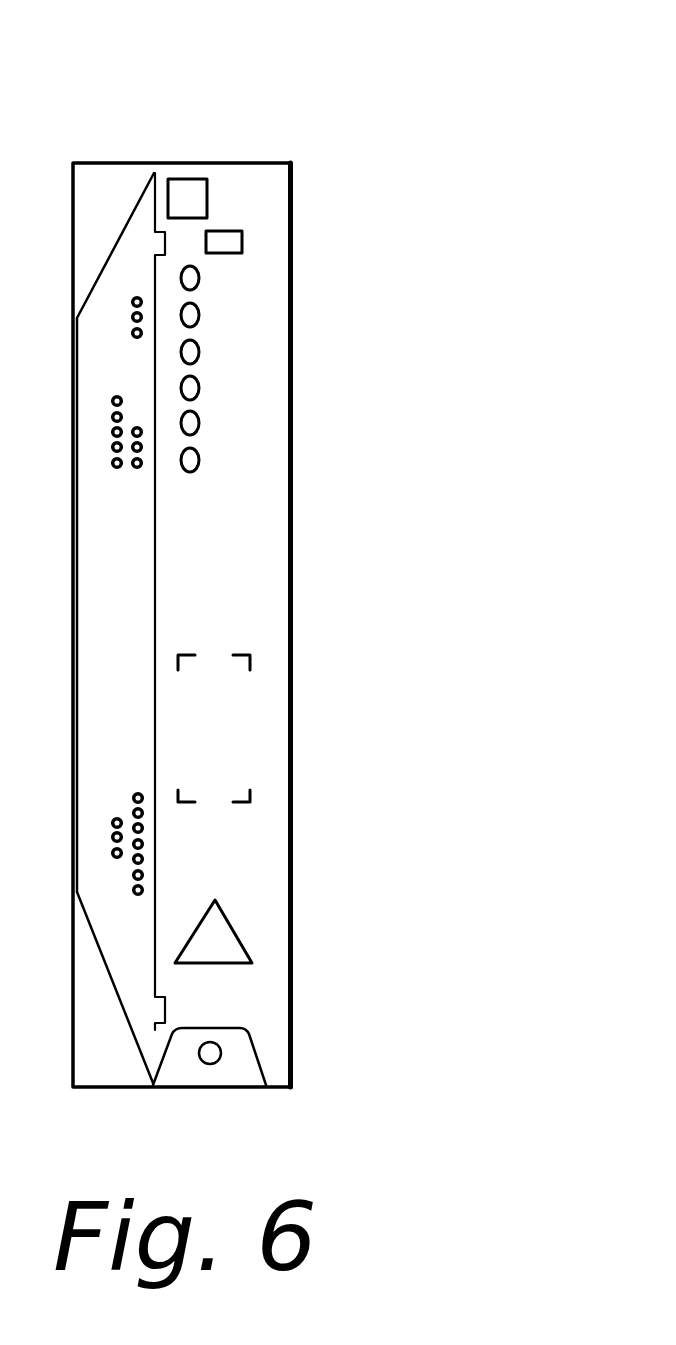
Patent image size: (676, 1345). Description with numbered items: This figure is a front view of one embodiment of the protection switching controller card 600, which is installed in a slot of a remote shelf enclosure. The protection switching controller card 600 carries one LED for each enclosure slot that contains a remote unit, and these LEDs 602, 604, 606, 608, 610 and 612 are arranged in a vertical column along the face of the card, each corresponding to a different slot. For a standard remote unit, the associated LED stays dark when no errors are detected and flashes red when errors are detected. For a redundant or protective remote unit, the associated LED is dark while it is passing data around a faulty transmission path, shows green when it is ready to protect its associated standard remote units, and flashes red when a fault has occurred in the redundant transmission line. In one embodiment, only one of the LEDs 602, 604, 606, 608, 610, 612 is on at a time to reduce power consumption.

The protection switching controller card 600 is at (435, 115).
The LED 602 is at (199, 278).
The LED 604 is at (199, 315).
The LED 606 is at (199, 348).
The LED 608 is at (199, 389).
The LED 610 is at (199, 423).
The LED 612 is at (199, 460).